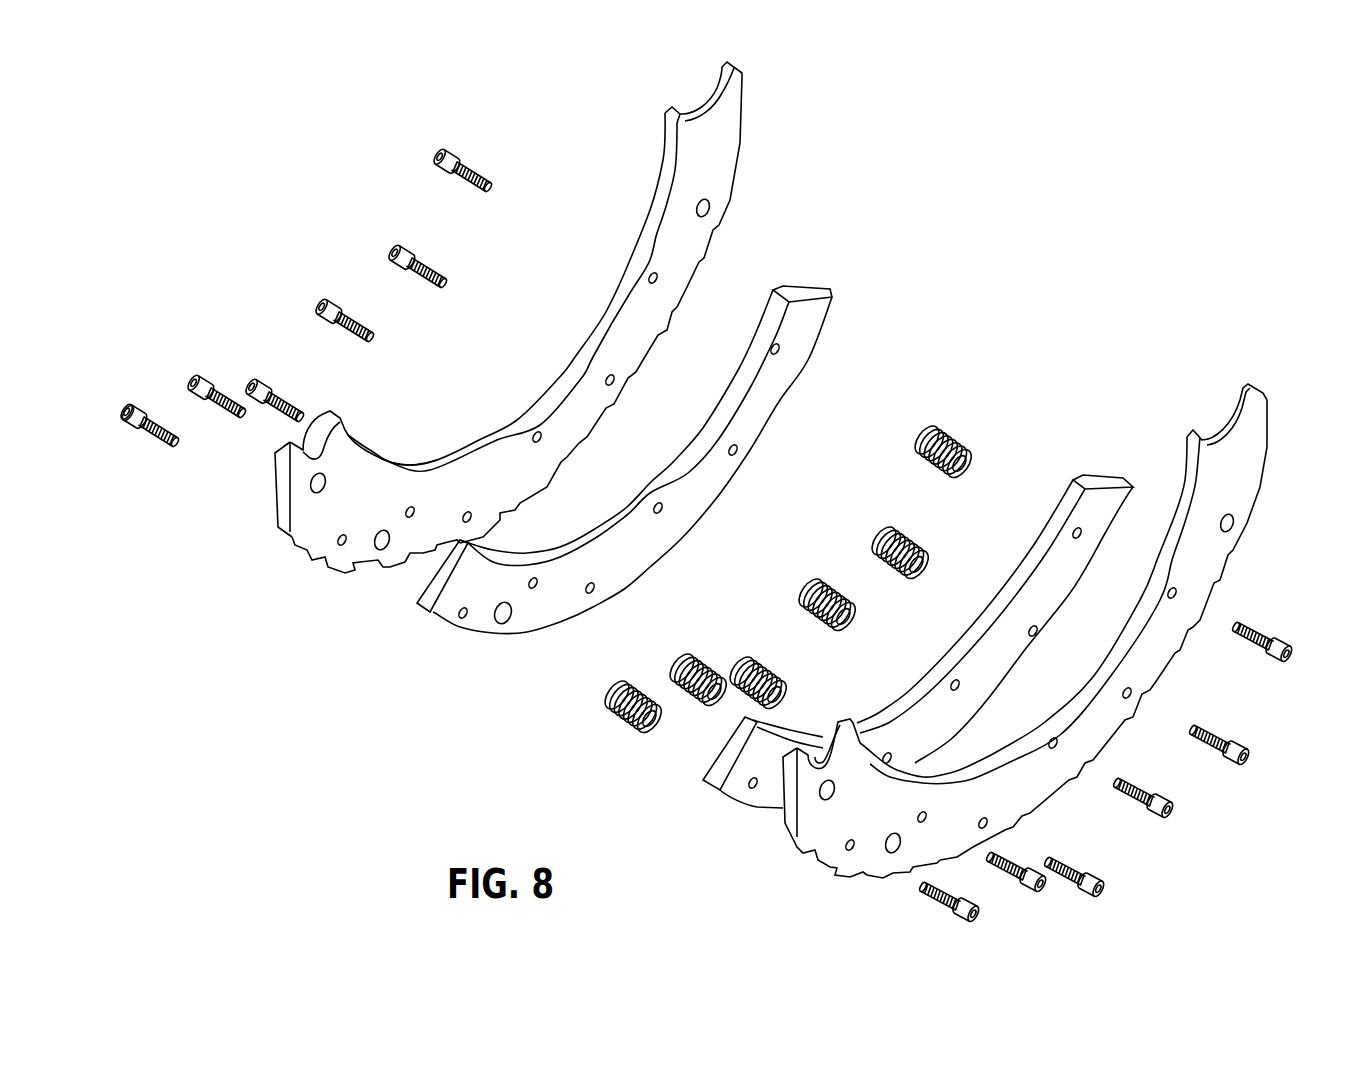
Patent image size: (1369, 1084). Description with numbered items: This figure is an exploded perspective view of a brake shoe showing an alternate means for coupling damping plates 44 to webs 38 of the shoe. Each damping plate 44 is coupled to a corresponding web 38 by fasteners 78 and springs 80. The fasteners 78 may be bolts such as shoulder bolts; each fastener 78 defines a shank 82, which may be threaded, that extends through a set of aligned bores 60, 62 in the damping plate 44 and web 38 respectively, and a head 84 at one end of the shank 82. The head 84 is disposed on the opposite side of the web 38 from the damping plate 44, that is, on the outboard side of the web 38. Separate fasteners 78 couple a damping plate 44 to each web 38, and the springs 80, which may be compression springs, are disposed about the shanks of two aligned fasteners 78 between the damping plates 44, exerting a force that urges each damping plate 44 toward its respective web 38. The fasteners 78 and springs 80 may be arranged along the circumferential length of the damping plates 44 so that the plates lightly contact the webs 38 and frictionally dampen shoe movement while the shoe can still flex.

The web 38 is at (707, 146).
The damping plate 44 is at (805, 312).
The bore 60 is at (778, 349).
The bore 62 is at (657, 283).
The fastener 78 is at (158, 445).
The spring 80 is at (622, 718).
The shank 82 is at (140, 428).
The head 84 is at (133, 403).